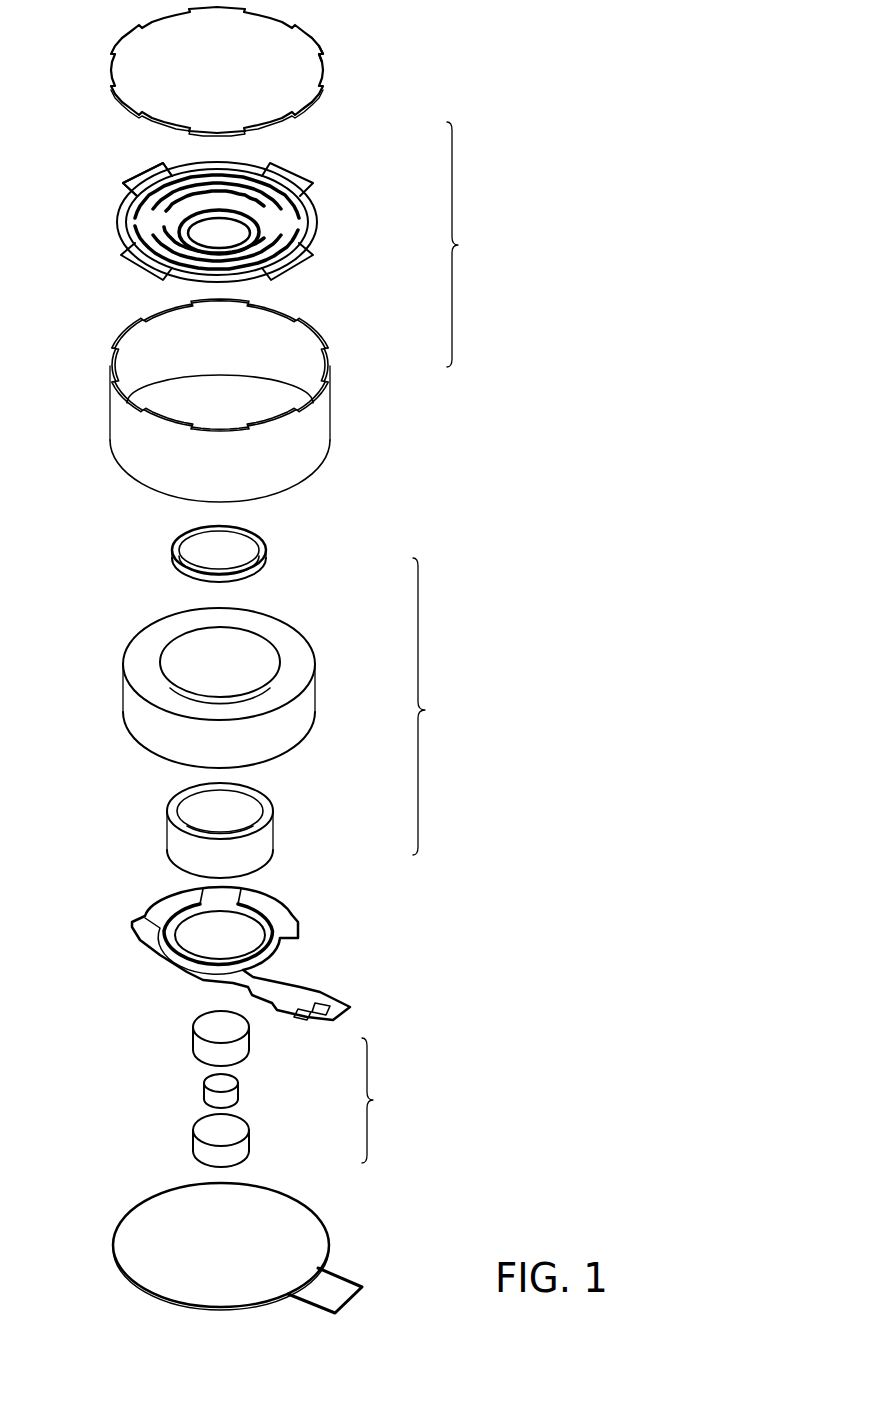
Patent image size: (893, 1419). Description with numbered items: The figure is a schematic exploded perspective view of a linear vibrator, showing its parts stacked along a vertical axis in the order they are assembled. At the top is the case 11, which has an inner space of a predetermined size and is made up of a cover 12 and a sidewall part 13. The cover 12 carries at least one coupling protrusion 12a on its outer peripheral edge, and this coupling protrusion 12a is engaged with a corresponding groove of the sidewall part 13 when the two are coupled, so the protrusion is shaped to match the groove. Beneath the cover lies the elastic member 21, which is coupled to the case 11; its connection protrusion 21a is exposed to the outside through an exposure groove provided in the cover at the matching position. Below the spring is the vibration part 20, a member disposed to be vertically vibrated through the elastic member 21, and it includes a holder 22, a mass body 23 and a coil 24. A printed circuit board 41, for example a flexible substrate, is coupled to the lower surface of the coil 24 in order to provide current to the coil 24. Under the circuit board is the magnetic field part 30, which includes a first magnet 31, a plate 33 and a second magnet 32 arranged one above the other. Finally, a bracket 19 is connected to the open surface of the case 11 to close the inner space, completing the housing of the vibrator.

The case 11 is at (471, 244).
The cover 12 is at (320, 77).
The coupling protrusion 12a is at (320, 43).
The elastic member 21 is at (122, 227).
The connection protrusion 21a is at (150, 178).
The sidewall part 13 is at (332, 393).
The vibration part 20 is at (436, 706).
The holder 22 is at (267, 553).
The mass body 23 is at (310, 702).
The coil 24 is at (273, 833).
The printed circuit board 41 is at (295, 922).
The magnetic field part 30 is at (383, 1100).
The magnet 31 is at (245, 1042).
The plate 33 is at (238, 1092).
The magnet 32 is at (247, 1145).
The bracket 19 is at (313, 1242).